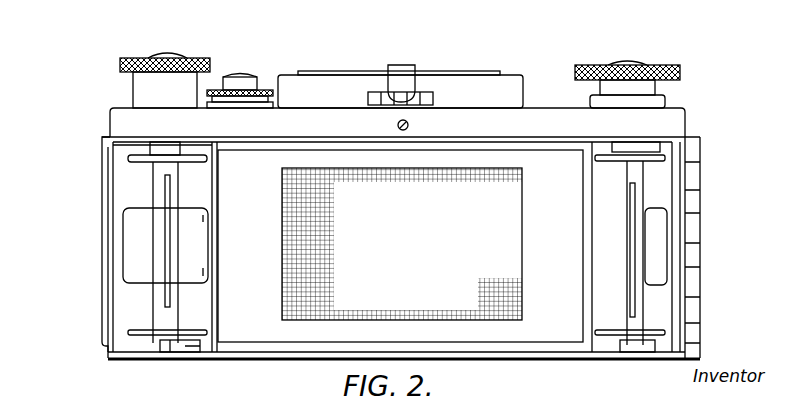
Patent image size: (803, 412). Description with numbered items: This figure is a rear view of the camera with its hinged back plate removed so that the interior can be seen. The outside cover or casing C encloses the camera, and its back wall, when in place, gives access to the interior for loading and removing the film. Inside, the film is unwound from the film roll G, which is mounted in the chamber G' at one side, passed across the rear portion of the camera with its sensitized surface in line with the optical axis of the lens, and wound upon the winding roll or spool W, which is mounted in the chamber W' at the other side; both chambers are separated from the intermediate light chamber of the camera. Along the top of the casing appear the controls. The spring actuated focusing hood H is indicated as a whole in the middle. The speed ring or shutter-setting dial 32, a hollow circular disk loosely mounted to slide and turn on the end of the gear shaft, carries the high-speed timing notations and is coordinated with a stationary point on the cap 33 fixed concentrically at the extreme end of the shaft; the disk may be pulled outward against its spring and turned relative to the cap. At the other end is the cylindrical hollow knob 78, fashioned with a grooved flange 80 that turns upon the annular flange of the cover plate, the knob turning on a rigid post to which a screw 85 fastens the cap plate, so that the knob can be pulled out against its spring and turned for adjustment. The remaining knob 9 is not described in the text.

The film winding knob 9 is at (125, 58).
The cap 33 is at (233, 77).
The speed ring or shutter-setting dial 32 is at (260, 93).
The focusing hood H is at (456, 72).
The screw 85 is at (618, 58).
The knob 78 is at (686, 61).
The grooved flange 80 is at (665, 97).
The outside cover or casing C is at (672, 125).
The winding roll or spool W is at (164, 226).
The winding spool chamber W' is at (121, 254).
The film roll G is at (632, 231).
The film roll chamber G' is at (630, 272).